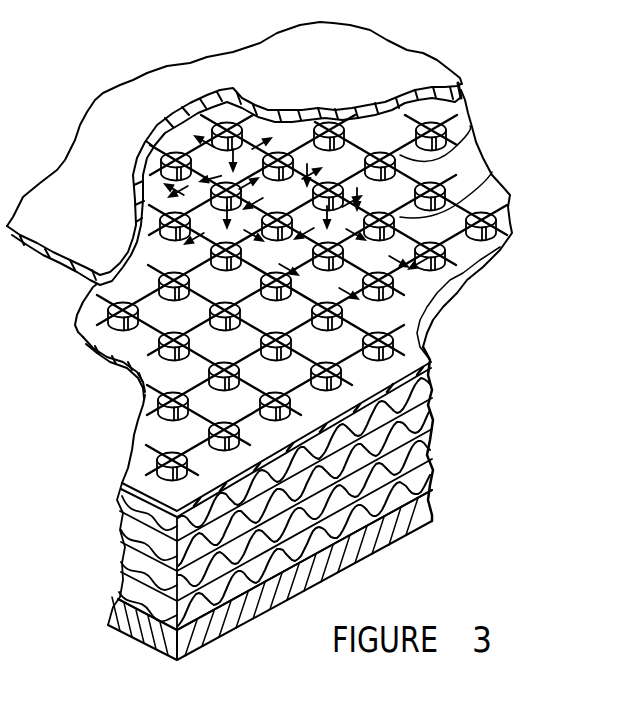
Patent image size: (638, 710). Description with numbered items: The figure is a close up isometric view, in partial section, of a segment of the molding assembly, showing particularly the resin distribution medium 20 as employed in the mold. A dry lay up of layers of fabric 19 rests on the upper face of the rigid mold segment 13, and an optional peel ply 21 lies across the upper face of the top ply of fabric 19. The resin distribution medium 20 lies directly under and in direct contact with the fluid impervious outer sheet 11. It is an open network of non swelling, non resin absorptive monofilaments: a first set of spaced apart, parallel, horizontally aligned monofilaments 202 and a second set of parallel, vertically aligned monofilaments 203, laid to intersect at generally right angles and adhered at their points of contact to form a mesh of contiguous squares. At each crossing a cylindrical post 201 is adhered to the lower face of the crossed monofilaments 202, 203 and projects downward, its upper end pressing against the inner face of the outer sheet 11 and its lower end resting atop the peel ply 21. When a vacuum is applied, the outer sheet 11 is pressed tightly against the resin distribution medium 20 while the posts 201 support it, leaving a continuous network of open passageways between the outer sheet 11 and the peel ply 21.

The fluid impervious outer sheet 11 is at (438, 63).
The rigid mold segment 13 is at (436, 505).
The fabric 19 is at (440, 430).
The resin distribution medium 20 is at (342, 271).
The post 201 is at (464, 168).
The first set of monofilaments 202 is at (467, 213).
The second set of monofilaments 203 is at (456, 138).
The peel ply 21 is at (441, 355).